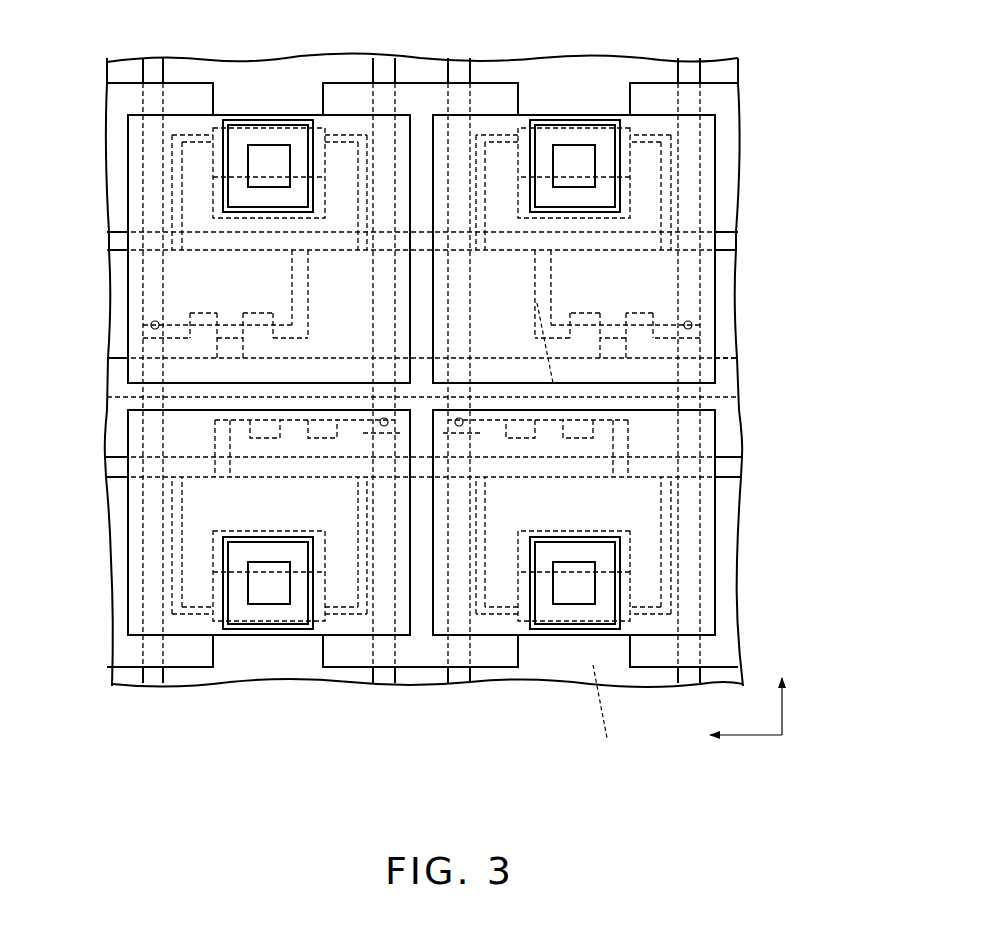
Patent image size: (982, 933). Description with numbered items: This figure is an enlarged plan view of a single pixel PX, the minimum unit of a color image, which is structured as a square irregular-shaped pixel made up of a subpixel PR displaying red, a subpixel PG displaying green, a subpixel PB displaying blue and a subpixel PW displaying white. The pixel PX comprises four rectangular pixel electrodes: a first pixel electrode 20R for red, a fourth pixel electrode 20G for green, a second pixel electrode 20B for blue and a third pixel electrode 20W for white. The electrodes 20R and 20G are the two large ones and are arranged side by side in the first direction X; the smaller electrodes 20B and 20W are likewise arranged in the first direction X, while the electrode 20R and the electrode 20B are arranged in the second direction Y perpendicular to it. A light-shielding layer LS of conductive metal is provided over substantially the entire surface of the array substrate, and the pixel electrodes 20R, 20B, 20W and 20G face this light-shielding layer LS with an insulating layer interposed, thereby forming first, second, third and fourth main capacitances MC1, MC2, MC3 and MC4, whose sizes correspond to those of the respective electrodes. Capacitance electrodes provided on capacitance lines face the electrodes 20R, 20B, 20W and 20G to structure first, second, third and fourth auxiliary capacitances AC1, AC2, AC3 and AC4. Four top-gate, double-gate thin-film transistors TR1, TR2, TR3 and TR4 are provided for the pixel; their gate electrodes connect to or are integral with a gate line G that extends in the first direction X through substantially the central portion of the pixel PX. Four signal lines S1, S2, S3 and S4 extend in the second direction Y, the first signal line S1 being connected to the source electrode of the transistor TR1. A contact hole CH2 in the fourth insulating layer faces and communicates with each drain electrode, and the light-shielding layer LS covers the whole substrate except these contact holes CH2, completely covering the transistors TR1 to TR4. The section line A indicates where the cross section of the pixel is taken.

The first signal line S1 is at (156, 70).
The second signal line S2 is at (381, 70).
The third signal line S3 is at (457, 70).
The fourth signal line S4 is at (686, 70).
The light-shielding layer LS is at (421, 97).
The gate line G is at (122, 394).
The contact hole CH2 is at (247, 130).
The subpixel displaying red PR is at (125, 170).
The subpixel displaying green PG is at (722, 177).
The subpixel displaying blue PB is at (123, 431).
The subpixel displaying white PW is at (707, 448).
The first pixel electrode 20R is at (122, 200).
The fourth pixel electrode 20G is at (722, 212).
The second pixel electrode 20B is at (122, 561).
The third pixel electrode 20W is at (720, 543).
The first auxiliary capacitance AC1 is at (143, 240).
The second auxiliary capacitance AC2 is at (198, 548).
The third auxiliary capacitance AC3 is at (648, 573).
The fourth auxiliary capacitance AC4 is at (650, 177).
The first main capacitance MC1 is at (125, 268).
The second main capacitance MC2 is at (123, 526).
The third main capacitance MC3 is at (719, 578).
The fourth main capacitance MC4 is at (722, 268).
The thin-film transistor TR1 is at (197, 309).
The thin-film transistor TR2 is at (276, 439).
The thin-film transistor TR3 is at (550, 436).
The thin-film transistor TR4 is at (614, 316).
The pixel PX is at (755, 348).
The section line A is at (539, 340).
The first direction X is at (741, 750).
The second direction Y is at (791, 699).